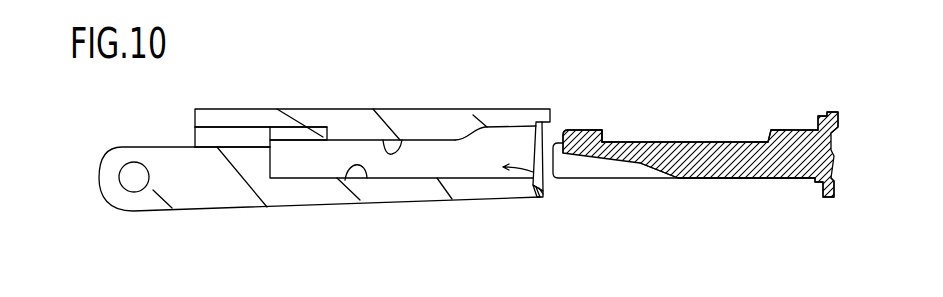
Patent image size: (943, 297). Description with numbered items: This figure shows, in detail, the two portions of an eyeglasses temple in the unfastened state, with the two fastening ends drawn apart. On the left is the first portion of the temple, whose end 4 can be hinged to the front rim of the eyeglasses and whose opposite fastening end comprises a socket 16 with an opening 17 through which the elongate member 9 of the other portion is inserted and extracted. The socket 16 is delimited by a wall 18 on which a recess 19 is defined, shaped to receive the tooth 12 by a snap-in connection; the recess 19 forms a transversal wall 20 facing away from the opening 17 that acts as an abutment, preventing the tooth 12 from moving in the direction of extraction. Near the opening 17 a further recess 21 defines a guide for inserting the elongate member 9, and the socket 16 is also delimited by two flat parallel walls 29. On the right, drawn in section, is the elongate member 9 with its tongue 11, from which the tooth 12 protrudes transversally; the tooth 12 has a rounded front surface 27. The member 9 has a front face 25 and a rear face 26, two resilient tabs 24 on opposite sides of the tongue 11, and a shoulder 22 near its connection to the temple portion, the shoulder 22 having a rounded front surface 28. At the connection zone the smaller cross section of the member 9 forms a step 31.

The end 4 is at (112, 147).
The elongate member 9 is at (673, 183).
The tongue 11 is at (655, 148).
The tooth 12 is at (594, 131).
The socket 16 is at (423, 152).
The opening 17 is at (540, 198).
The wall 18 is at (355, 125).
The recess 19 is at (318, 134).
The transversal wall 20 is at (321, 134).
The further recess 21 is at (512, 143).
The shoulder 22 is at (796, 142).
The resilient tabs 24 is at (589, 170).
The front face 25 is at (685, 143).
The rear face 26 is at (738, 179).
The front surface 27 is at (572, 138).
The front surface 28 is at (767, 131).
The flat parallel walls 29 is at (395, 152).
The step 31 is at (820, 126).